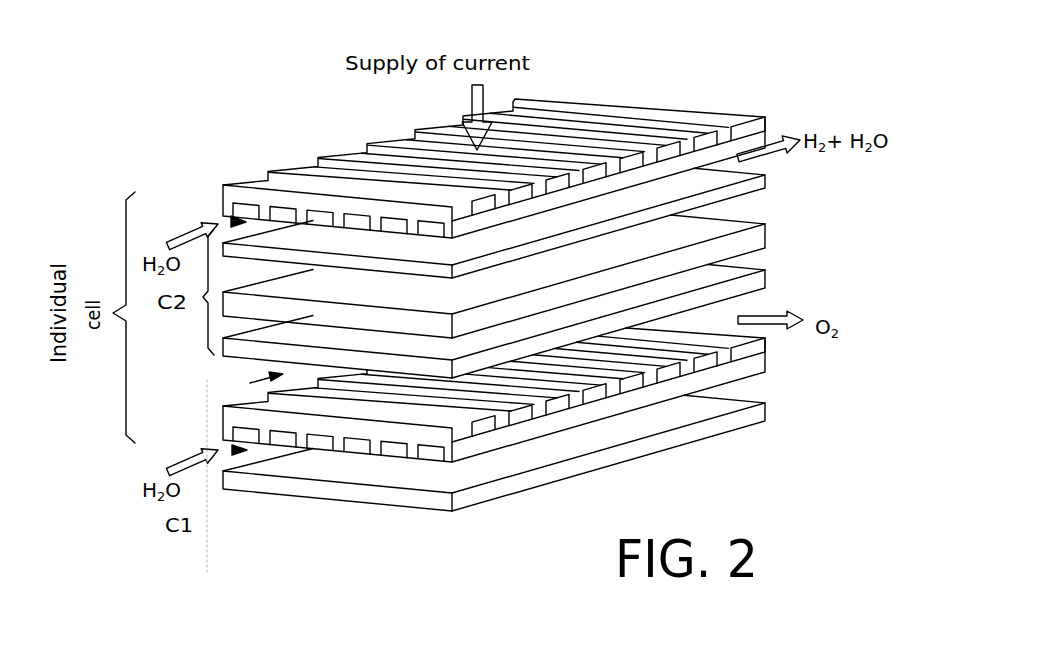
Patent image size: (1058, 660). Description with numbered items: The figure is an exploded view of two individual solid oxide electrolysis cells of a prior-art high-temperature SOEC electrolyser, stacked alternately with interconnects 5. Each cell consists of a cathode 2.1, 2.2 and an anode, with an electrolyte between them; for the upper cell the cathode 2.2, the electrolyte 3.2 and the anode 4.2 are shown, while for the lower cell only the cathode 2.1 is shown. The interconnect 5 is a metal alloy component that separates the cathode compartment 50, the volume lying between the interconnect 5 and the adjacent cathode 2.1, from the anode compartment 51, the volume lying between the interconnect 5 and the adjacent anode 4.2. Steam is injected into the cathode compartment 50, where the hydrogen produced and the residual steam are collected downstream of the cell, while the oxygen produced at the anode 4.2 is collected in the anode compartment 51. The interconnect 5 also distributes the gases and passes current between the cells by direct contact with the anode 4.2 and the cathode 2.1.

The interconnect 5 is at (221, 192).
The cathode compartment 50 is at (229, 221).
The anode compartment 51 is at (250, 383).
The cathode 2.1 is at (767, 407).
The cathode 2.2 is at (767, 176).
The electrolyte 3.2 is at (767, 228).
The anode 4.2 is at (767, 274).